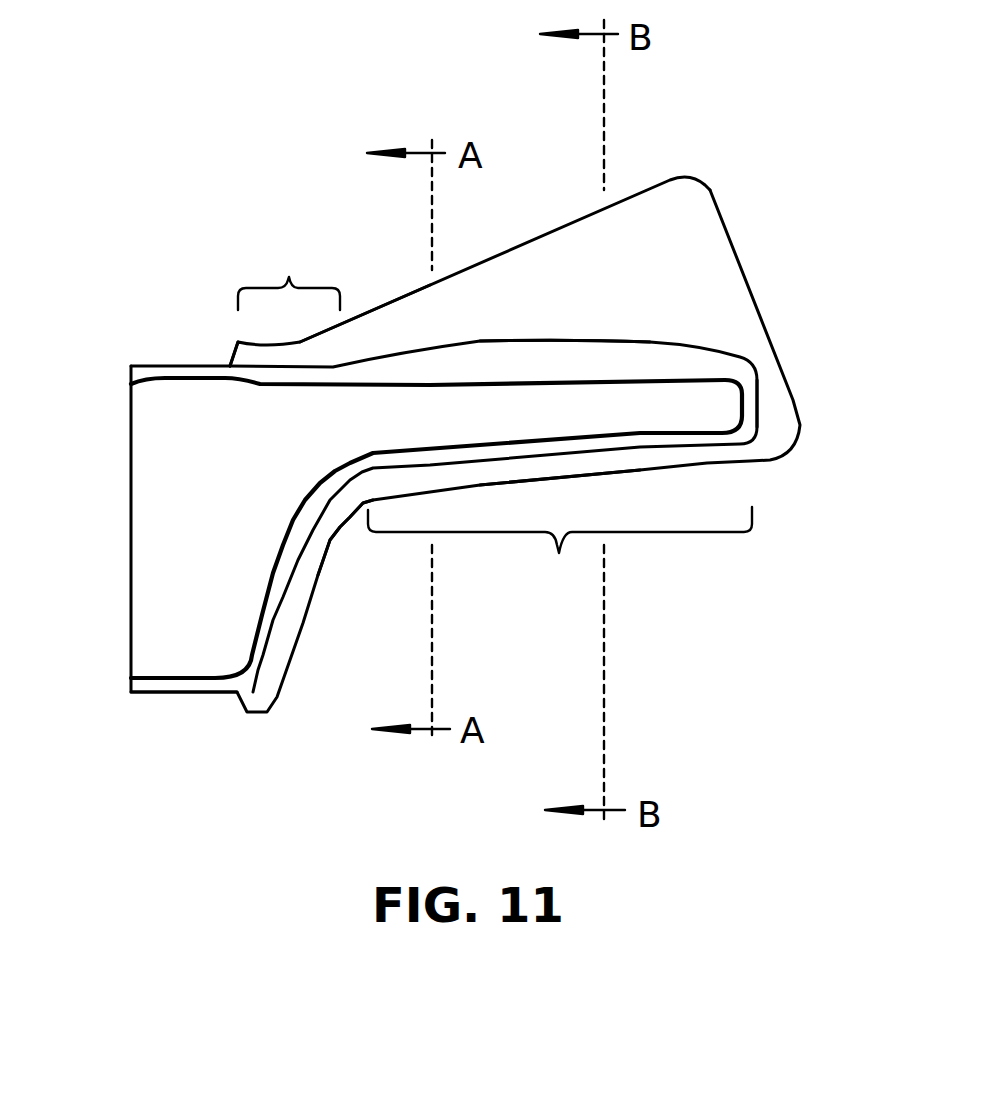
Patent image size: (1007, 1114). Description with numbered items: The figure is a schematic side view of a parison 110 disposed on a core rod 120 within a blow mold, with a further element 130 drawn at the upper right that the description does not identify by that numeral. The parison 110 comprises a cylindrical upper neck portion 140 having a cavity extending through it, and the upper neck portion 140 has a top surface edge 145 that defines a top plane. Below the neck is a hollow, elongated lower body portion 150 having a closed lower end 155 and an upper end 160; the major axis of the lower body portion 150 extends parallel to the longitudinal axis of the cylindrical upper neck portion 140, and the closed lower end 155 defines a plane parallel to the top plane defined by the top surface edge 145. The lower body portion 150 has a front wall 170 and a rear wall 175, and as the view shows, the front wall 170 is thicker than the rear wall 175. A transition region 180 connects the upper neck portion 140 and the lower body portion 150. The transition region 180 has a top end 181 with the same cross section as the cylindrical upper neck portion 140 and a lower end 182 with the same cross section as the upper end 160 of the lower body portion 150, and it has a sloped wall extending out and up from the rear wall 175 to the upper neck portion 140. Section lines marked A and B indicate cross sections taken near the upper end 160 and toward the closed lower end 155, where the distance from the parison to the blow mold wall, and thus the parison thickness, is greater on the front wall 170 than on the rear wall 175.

The parison 110 is at (680, 370).
The core rod 120 is at (710, 412).
The flange 130 is at (677, 210).
The upper neck portion 140 is at (145, 473).
The top surface edge 145 is at (132, 685).
The lower body portion 150 is at (560, 557).
The closed lower end 155 is at (757, 393).
The upper end 160 is at (377, 537).
The front wall 170 is at (542, 342).
The rear wall 175 is at (580, 457).
The transition region 180 is at (290, 275).
The top end 181 is at (225, 360).
The lower end 182 is at (362, 342).